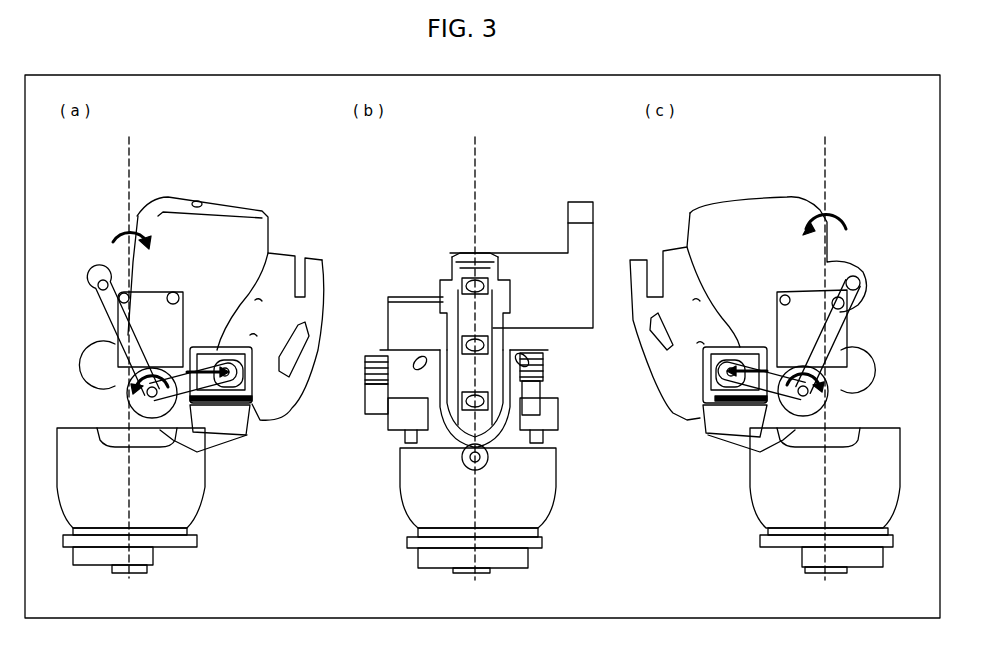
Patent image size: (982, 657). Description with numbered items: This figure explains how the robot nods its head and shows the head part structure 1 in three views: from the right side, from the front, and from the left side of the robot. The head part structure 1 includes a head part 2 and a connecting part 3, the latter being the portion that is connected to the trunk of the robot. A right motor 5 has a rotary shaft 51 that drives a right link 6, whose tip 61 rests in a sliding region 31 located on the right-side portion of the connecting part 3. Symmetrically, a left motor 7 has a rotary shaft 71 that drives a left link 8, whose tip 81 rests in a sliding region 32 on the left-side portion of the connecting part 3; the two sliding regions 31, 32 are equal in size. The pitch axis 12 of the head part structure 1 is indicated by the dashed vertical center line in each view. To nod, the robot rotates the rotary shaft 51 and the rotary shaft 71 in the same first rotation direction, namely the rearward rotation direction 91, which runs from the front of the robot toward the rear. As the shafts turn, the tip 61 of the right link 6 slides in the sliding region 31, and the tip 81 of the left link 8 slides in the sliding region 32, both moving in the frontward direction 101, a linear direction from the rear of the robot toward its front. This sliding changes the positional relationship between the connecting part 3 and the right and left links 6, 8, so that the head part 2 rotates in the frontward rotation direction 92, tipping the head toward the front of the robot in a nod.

The head part structure 1 is at (283, 161).
The head part 2 is at (172, 196).
The connecting part 3 is at (200, 503).
The right motor 5 is at (104, 330).
The right link 6 is at (120, 402).
The left motor 7 is at (860, 350).
The left link 8 is at (843, 400).
The pitch axis 12 is at (126, 157).
The sliding region 31 is at (255, 393).
The sliding region 32 is at (703, 385).
The rotary shaft 51 is at (197, 450).
The tip 61 is at (243, 410).
The rotary shaft 71 is at (760, 460).
The tip 81 is at (710, 430).
The rearward rotation direction 91 is at (112, 300).
The frontward rotation direction 92 is at (112, 226).
The frontward direction 101 is at (270, 252).